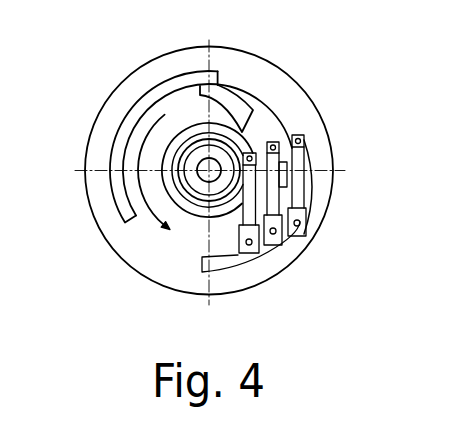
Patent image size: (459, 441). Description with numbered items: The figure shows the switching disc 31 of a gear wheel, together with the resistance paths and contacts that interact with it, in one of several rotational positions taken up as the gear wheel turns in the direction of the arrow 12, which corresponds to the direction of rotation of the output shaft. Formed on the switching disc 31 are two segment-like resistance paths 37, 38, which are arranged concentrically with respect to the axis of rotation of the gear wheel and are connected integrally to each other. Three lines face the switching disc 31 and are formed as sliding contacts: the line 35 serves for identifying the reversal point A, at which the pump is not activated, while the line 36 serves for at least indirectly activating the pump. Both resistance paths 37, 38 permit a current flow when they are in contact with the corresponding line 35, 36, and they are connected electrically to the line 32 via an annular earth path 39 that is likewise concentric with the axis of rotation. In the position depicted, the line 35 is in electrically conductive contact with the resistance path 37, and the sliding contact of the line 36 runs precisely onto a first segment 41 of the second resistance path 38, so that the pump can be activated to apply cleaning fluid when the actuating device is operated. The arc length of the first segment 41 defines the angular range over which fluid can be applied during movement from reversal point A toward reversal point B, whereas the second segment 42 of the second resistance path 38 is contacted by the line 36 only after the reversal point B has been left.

The arrow 12 is at (140, 155).
The switching disc 31 is at (89, 245).
The line 32 is at (248, 208).
The line 35 is at (272, 208).
The line 36 is at (300, 189).
The resistance path 37 is at (257, 121).
The second resistance path 38 is at (169, 84).
The annular earth path 39 is at (197, 210).
The first segment 41 is at (308, 165).
The second segment 42 is at (133, 115).